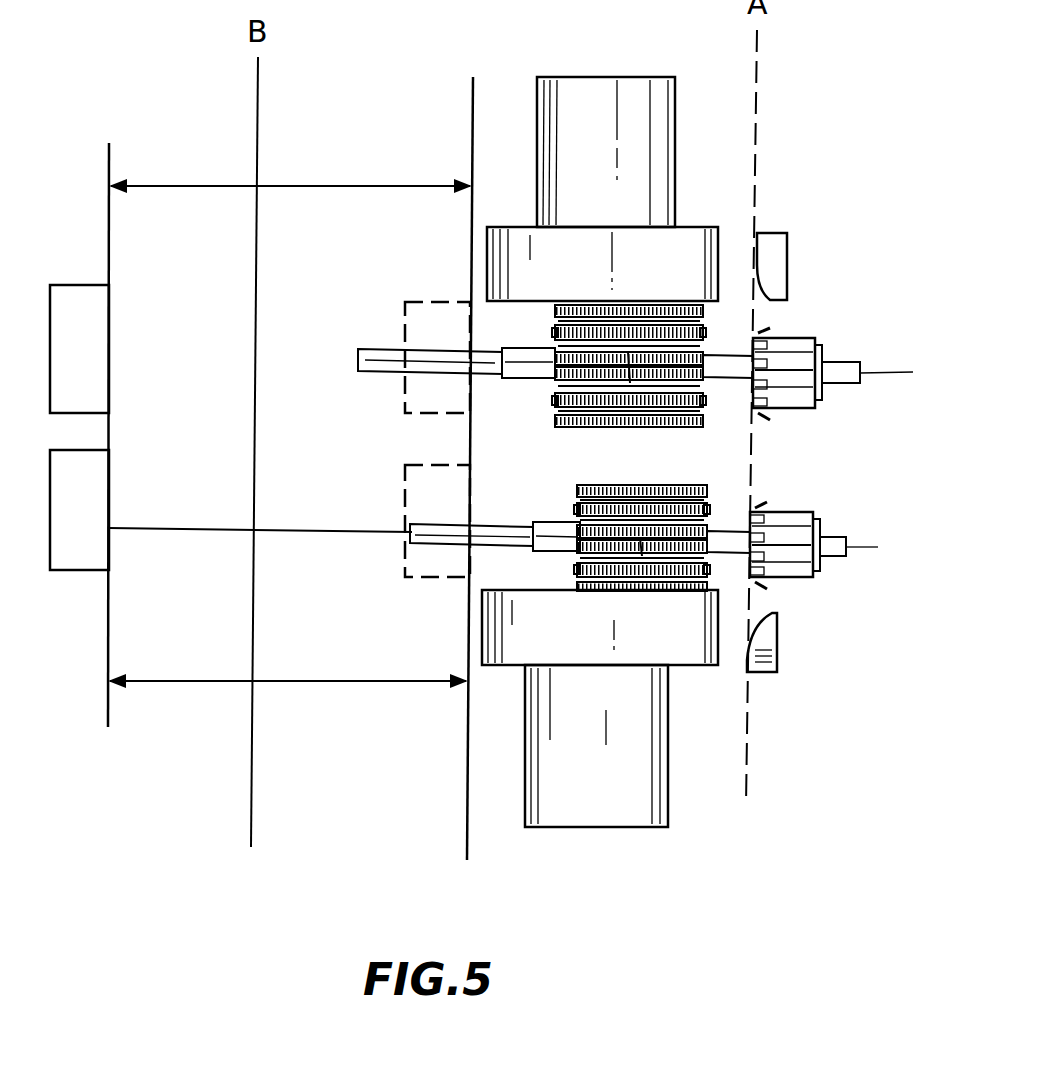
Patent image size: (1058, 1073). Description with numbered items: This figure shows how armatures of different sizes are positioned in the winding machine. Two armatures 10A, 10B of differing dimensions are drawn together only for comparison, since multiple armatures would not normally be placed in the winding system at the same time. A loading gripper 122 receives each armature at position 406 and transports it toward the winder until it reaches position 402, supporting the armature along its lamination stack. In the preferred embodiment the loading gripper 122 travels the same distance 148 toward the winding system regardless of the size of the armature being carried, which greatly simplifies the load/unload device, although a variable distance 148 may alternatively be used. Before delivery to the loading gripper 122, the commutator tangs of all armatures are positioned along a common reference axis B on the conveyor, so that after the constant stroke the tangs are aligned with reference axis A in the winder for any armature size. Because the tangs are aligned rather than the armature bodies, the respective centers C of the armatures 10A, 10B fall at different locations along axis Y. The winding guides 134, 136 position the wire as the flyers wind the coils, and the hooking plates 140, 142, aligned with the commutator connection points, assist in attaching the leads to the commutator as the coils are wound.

The armature 10A is at (400, 350).
The armature 10B is at (438, 522).
The loading gripper 122 is at (109, 353).
The winding guide 134 is at (487, 270).
The winding guide 136 is at (482, 630).
The hooking plate 140 is at (756, 262).
The hooking plate 142 is at (748, 640).
The distance 148 is at (286, 184).
The position 402 is at (472, 85).
The position 406 is at (106, 158).
The center C is at (630, 365).